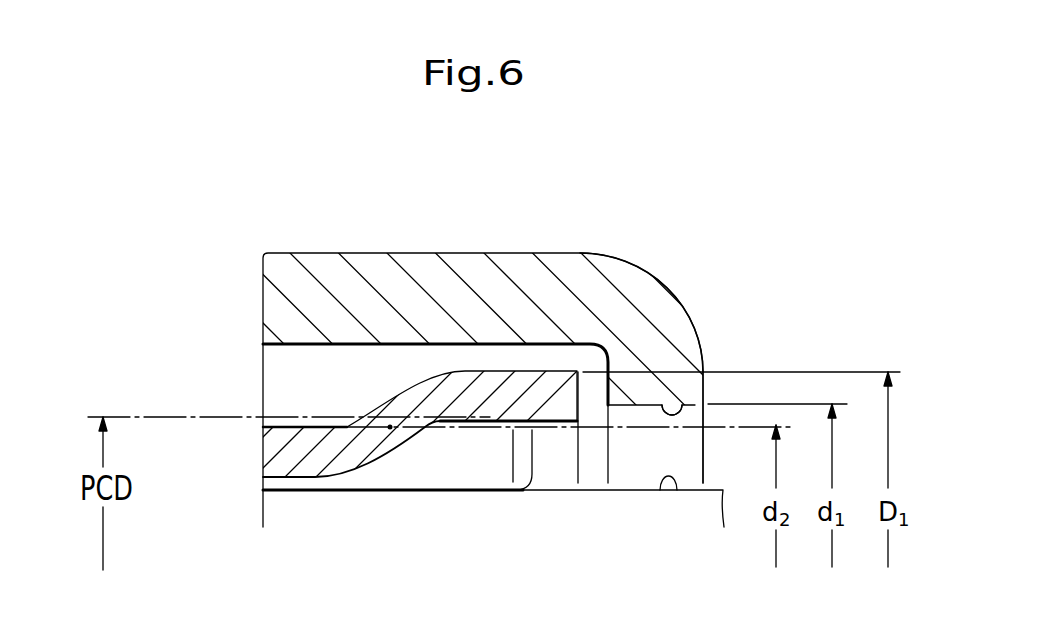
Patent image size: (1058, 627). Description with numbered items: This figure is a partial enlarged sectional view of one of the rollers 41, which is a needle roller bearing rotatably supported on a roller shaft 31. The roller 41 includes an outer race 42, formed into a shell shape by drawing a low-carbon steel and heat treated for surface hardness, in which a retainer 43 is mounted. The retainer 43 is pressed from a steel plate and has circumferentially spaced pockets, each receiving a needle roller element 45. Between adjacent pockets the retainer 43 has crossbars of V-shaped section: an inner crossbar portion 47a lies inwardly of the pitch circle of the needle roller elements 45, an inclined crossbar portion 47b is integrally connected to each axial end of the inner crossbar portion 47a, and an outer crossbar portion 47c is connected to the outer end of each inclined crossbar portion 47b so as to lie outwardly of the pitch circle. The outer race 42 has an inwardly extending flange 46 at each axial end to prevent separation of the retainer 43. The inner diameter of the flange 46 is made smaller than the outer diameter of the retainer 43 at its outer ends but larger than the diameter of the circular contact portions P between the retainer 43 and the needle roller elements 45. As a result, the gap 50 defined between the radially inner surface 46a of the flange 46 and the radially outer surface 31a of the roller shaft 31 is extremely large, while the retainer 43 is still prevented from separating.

The roller shaft 31 is at (277, 507).
The radially outer surface of the roller shaft 31a is at (670, 490).
The roller 41 is at (290, 253).
The outer race 42 is at (367, 265).
The retainer 43 is at (290, 418).
The needle roller element 45 is at (277, 368).
The flange 46 is at (670, 337).
The radially inner surface of the flange 46a is at (683, 403).
The inner crossbar portion 47a is at (280, 447).
The inclined crossbar portion 47b is at (377, 443).
The outer crossbar portion 47c is at (502, 408).
The gap 50 is at (630, 465).
The circular contact portion P is at (390, 427).